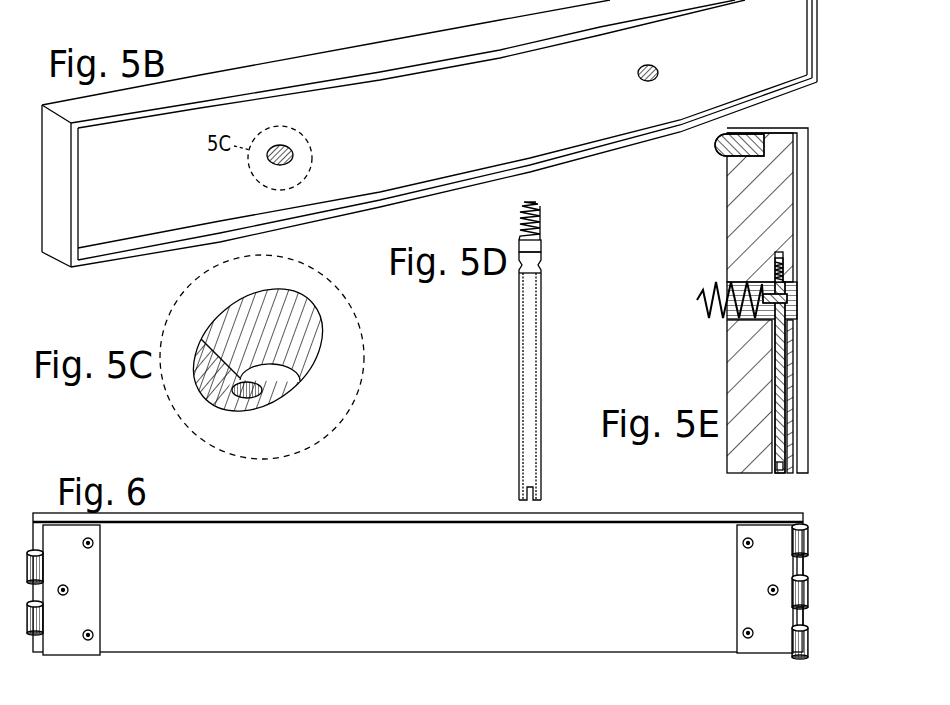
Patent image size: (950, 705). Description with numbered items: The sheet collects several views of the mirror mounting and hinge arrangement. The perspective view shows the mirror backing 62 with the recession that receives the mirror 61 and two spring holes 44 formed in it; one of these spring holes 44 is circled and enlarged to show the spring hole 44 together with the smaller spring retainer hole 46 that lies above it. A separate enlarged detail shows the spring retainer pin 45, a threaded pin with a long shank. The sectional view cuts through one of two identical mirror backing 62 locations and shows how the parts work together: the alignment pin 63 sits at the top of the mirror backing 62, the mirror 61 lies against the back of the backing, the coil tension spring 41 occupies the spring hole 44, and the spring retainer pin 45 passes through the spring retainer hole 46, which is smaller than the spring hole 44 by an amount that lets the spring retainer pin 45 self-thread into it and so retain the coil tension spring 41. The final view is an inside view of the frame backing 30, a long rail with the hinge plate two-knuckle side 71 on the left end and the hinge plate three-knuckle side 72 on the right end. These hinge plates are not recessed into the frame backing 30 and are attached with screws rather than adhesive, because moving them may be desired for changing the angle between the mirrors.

In FIG. 6, the frame backing 30 is at (427, 512).
In FIG. 5E, the coil tension spring 41 is at (702, 305).
In FIG. 5B, the spring hole #2 44 is at (293, 151).
In FIG. 5C, the spring hole #2 44 is at (195, 387).
In FIG. 5E, the spring hole #2 44 is at (730, 283).
In FIG. 5D, the spring retainer pin #2 45 is at (518, 335).
In FIG. 5E, the spring retainer pin #2 45 is at (780, 472).
In FIG. 5C, the spring retainer hole 46 is at (284, 383).
In FIG. 5E, the spring retainer hole 46 is at (792, 337).
In FIG. 5E, the mirror 61 is at (808, 213).
In FIG. 5B, the mirror backing 62 is at (337, 63).
In FIG. 5C, the mirror backing 62 is at (187, 313).
In FIG. 5E, the mirror backing 62 is at (727, 352).
In FIG. 5E, the alignment pin 63 is at (717, 149).
In FIG. 6, the hinge plate two-knuckle side 71 is at (102, 583).
In FIG. 6, the hinge plate three-knuckle side 72 is at (736, 583).